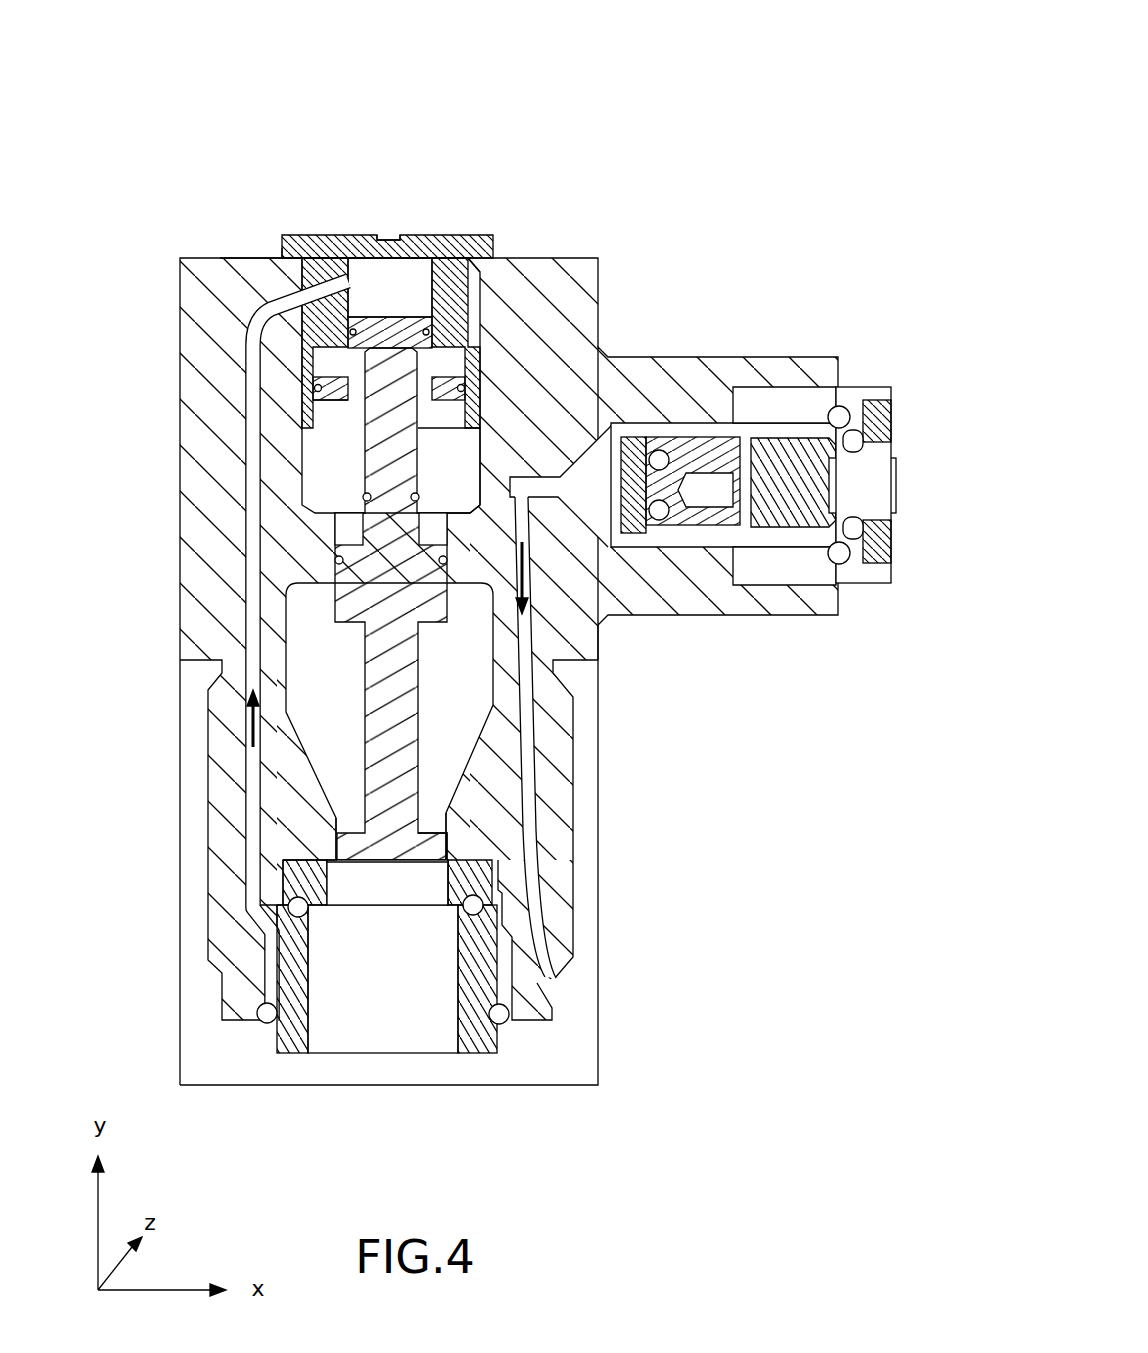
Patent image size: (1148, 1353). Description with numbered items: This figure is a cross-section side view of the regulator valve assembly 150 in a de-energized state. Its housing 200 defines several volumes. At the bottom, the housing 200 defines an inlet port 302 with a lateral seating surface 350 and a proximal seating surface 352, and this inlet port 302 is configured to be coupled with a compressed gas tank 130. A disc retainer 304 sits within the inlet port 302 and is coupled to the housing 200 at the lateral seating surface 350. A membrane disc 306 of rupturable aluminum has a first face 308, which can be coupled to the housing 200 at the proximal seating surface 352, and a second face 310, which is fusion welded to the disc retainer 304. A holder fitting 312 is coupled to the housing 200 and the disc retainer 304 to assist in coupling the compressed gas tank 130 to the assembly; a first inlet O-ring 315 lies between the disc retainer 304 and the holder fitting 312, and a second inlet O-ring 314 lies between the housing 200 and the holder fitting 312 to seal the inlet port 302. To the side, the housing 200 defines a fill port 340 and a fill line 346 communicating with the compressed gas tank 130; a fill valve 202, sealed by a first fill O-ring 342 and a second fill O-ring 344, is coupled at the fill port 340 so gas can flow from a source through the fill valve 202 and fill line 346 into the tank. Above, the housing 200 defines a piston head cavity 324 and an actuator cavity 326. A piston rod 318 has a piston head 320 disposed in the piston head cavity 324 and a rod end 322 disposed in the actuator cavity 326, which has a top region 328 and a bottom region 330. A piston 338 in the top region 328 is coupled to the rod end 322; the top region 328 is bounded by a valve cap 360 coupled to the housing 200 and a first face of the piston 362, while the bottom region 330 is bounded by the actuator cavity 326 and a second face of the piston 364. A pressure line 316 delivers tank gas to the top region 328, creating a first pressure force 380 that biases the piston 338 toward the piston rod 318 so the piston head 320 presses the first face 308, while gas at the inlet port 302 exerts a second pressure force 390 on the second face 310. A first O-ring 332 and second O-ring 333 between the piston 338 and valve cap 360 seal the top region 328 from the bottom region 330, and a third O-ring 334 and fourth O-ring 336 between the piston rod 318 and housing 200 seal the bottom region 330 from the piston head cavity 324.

The compressed gas tank 130 is at (598, 676).
The regulator valve assembly 150 is at (449, 126).
The housing 200 is at (592, 257).
The fill valve 202 is at (896, 487).
The inlet port 302 is at (407, 1032).
The disc retainer 304 is at (484, 904).
The membrane disc 306 is at (450, 855).
The first face 308 is at (416, 858).
The second face 310 is at (360, 870).
The holder fitting 312 is at (274, 1070).
The second inlet O-ring 314 is at (497, 1070).
The first inlet O-ring 315 is at (288, 906).
The pressure line 316 is at (246, 337).
The piston rod 318 is at (286, 625).
The piston head 320 is at (335, 845).
The rod end 322 is at (318, 388).
The piston head cavity 324 is at (345, 778).
The actuator cavity 326 is at (448, 477).
The top region 328 is at (370, 235).
The bottom region 330 is at (350, 450).
The first O-ring 332 is at (267, 258).
The second O-ring 333 is at (474, 296).
The third O-ring 334 is at (365, 497).
The fourth O-ring 336 is at (338, 560).
The piston 338 is at (443, 235).
The fill port 340 is at (596, 447).
The first fill O-ring 342 is at (661, 450).
The second fill O-ring 344 is at (840, 405).
The fill line 346 is at (526, 718).
The lateral seating surface 350 is at (490, 868).
The proximal seating surface 352 is at (478, 860).
The valve cap 360 is at (297, 236).
The first face of the piston 362 is at (282, 255).
The second face of the piston 364 is at (333, 400).
The first pressure force 380 is at (383, 305).
The second pressure force 390 is at (388, 915).